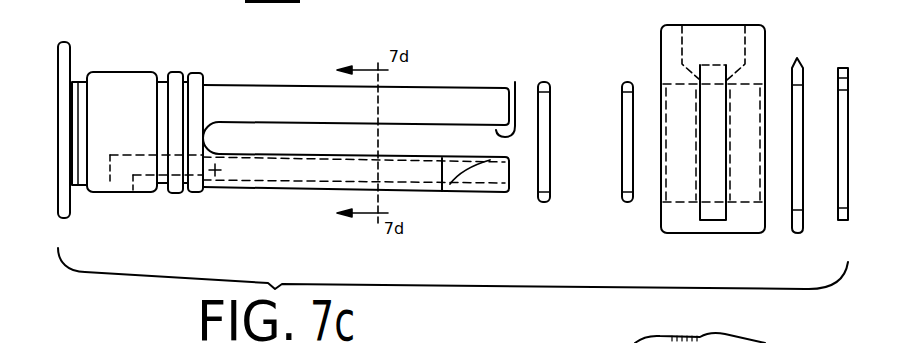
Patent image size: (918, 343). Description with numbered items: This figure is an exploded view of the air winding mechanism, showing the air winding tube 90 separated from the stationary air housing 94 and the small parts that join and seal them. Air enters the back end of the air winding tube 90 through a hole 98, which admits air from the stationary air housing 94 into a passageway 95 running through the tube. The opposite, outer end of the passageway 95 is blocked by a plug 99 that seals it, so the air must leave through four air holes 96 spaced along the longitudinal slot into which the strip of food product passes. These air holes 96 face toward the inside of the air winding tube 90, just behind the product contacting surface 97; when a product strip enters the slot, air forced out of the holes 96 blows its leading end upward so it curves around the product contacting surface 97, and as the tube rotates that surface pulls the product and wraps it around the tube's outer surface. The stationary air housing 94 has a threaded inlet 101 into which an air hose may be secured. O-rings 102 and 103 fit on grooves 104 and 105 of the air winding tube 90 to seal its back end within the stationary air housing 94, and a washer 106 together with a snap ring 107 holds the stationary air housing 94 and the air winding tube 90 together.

The air winding tube 90 is at (253, 98).
The stationary air housing 94 is at (733, 234).
The passageway 95 is at (215, 176).
The air holes 96 is at (310, 153).
The product contacting surface 97 is at (514, 84).
The hole 98 is at (120, 180).
The plug 99 is at (504, 177).
The threaded inlet 101 is at (734, 38).
The O-ring 102 is at (551, 202).
The O-ring 103 is at (624, 202).
The groove 104 is at (80, 82).
The groove 105 is at (162, 82).
The washer 106 is at (800, 234).
The snap ring 107 is at (842, 210).